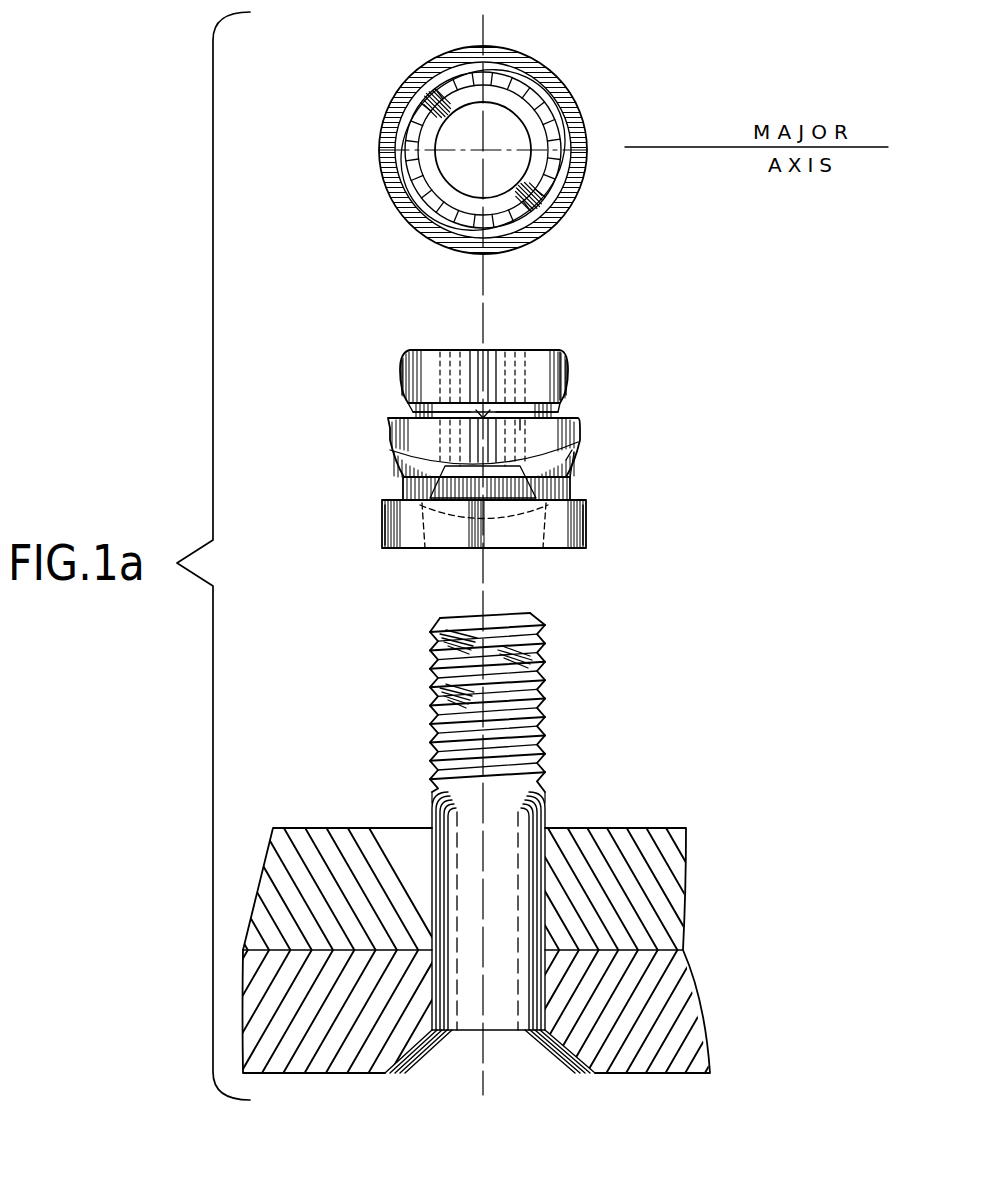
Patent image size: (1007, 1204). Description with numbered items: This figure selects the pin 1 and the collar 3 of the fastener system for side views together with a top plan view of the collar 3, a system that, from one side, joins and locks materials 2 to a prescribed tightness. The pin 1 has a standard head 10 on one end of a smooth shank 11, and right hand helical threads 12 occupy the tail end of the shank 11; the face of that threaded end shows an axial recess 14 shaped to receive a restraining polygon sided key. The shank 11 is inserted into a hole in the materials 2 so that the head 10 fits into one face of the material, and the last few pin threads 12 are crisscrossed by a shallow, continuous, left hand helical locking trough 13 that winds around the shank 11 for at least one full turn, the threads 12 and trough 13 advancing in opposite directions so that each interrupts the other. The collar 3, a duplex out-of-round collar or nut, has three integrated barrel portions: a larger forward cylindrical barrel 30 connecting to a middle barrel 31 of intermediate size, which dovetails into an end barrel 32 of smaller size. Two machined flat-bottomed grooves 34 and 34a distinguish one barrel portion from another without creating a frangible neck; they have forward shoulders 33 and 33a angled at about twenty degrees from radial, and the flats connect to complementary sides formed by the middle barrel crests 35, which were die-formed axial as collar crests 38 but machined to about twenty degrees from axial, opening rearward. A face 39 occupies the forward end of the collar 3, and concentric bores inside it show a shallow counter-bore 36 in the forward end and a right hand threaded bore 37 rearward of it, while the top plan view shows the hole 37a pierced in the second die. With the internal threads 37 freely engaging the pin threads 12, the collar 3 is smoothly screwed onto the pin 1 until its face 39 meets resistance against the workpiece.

The pin 1 is at (463, 807).
The materials 2 is at (668, 885).
The collar 3 is at (580, 78).
The head 10 is at (457, 1053).
The shank 11 is at (543, 845).
The right hand threads 12 is at (540, 707).
The locking trough 13 is at (440, 693).
The axial recess 14 is at (487, 590).
The forward cylindrical barrel 30 is at (420, 523).
The middle barrel 31 is at (450, 432).
The end barrel 32 is at (517, 367).
The forward shoulder 33 is at (567, 500).
The forward shoulder 33a is at (417, 412).
The flat-bottomed groove 34 is at (407, 487).
The flat-bottomed groove 34a is at (533, 412).
The crests 35 is at (570, 460).
The counter-bore 36 is at (420, 547).
The threaded bore 37 is at (407, 205).
The hole 37a is at (433, 350).
The collar crests 38 is at (380, 142).
The face 39 is at (403, 378).